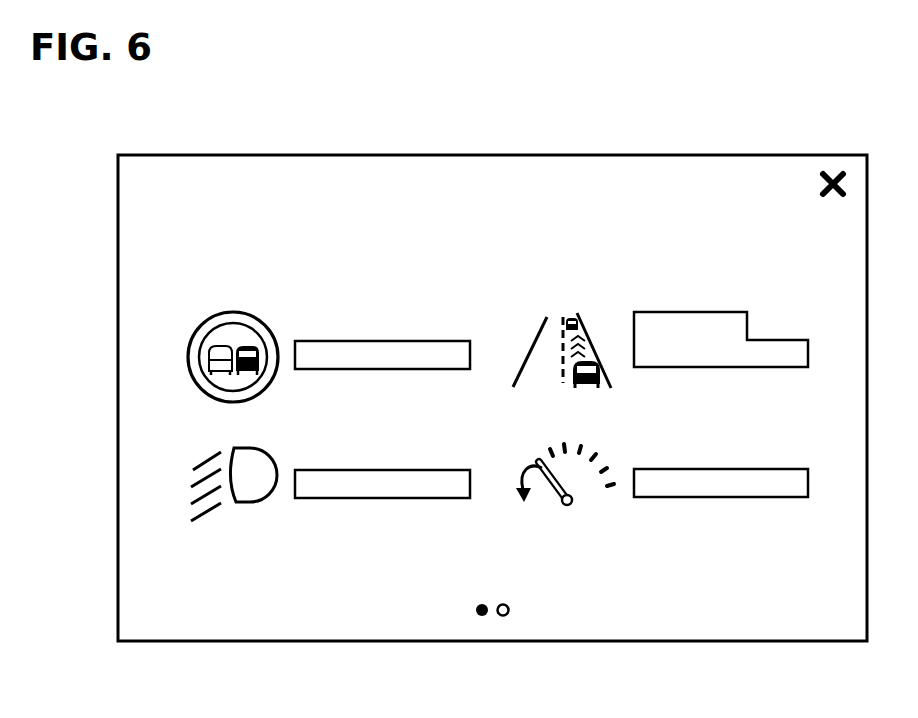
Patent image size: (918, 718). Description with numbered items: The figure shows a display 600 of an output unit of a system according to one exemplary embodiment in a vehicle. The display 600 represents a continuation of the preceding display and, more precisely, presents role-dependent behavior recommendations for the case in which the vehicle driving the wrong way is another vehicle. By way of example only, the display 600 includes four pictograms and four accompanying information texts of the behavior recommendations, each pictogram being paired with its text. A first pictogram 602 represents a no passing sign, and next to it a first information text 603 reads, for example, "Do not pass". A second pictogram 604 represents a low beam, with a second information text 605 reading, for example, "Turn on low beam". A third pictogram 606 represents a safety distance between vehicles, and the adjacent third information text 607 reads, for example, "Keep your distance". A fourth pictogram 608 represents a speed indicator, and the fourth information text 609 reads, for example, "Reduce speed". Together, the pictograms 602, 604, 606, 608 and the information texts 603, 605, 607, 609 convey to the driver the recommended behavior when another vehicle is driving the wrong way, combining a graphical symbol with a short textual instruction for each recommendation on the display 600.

The display 600 is at (200, 135).
The first pictogram 602 is at (211, 313).
The first information text 603 is at (373, 352).
The second pictogram 604 is at (240, 505).
The second information text 605 is at (376, 485).
The third pictogram 606 is at (538, 334).
The third information text 607 is at (783, 352).
The fourth pictogram 608 is at (568, 506).
The fourth information text 609 is at (718, 483).